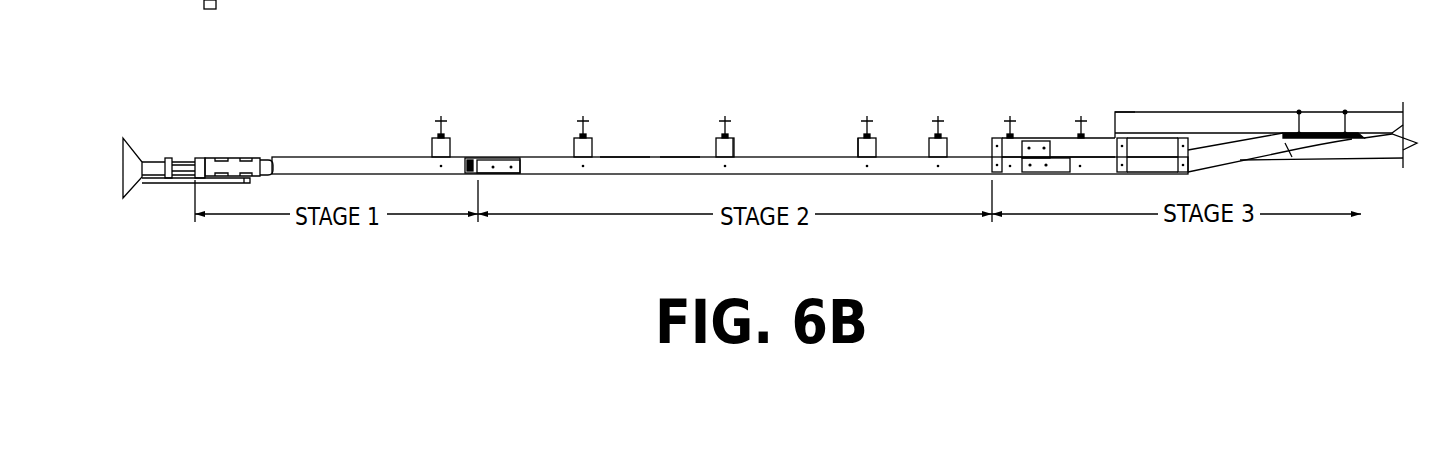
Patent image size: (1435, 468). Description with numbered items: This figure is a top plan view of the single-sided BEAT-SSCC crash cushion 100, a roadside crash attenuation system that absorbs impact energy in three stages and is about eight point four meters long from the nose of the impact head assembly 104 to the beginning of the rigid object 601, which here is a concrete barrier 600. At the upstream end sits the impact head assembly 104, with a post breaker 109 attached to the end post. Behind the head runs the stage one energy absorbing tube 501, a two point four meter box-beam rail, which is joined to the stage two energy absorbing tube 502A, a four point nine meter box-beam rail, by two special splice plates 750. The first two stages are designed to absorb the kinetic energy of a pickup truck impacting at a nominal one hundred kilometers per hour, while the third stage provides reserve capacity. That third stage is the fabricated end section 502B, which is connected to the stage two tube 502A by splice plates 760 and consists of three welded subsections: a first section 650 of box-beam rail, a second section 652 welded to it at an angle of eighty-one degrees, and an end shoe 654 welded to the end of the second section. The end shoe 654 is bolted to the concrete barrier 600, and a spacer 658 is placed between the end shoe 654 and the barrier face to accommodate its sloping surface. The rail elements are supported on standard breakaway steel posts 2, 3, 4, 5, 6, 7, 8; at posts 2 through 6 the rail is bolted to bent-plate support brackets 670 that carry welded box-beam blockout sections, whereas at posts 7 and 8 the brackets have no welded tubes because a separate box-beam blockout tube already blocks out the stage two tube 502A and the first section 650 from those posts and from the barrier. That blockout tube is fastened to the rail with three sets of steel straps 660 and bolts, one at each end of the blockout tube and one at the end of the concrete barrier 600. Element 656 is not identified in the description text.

The crash cushion 100 is at (672, 75).
The impact head assembly 104 is at (128, 123).
The post breaker 109 is at (183, 183).
The stage one energy absorbing tube 501 is at (307, 165).
The splice plates 750 is at (498, 163).
The stage two energy absorbing tube 502A is at (622, 163).
The end section 502B is at (1057, 198).
The post 2 is at (442, 118).
The post 3 is at (584, 118).
The post 4 is at (727, 118).
The post 5 is at (869, 118).
The post 6 is at (941, 118).
The post 7 is at (1011, 118).
The post 8 is at (1082, 118).
The support bracket 670 is at (858, 137).
The straps 660 is at (1184, 140).
The splice plates 760 is at (1037, 168).
The first section 650 is at (1143, 172).
The concrete barrier 600 is at (1157, 120).
The rigid object 601 is at (1116, 113).
The posts 656 is at (1345, 113).
The second section 652 is at (1257, 150).
The end shoe 654 is at (1317, 147).
The spacer 658 is at (1361, 138).